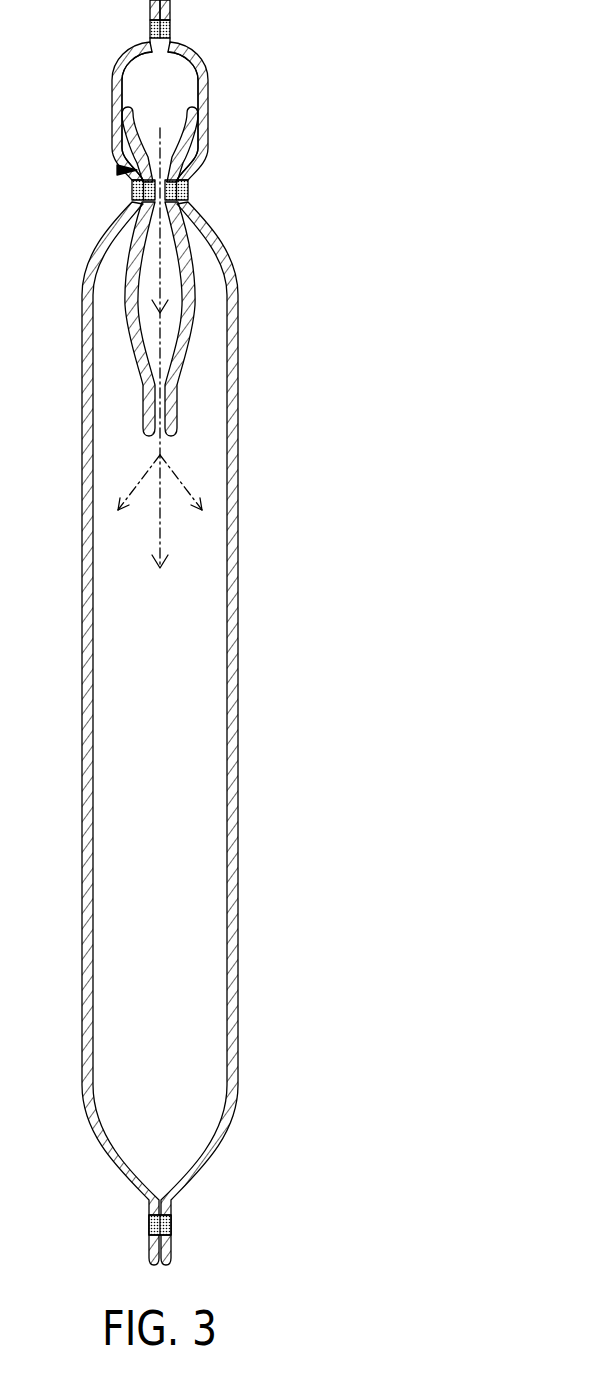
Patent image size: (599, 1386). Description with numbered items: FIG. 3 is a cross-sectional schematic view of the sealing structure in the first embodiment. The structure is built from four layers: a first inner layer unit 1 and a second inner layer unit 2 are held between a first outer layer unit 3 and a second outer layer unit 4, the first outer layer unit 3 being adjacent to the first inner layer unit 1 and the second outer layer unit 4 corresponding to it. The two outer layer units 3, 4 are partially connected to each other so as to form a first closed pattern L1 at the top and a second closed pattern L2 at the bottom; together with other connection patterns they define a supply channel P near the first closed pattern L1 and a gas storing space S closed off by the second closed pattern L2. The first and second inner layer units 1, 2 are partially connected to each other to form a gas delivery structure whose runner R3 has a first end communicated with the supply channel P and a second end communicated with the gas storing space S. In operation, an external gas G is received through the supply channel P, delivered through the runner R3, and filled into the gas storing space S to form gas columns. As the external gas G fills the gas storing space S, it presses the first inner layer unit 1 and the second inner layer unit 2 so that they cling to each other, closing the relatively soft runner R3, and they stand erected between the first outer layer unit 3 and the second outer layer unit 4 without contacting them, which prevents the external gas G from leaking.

The first closed pattern L1 is at (148, 30).
The supply channel P is at (167, 68).
The first outer layer unit 3 is at (118, 92).
The second outer layer unit 4 is at (200, 90).
The first inner layer unit 1 is at (130, 130).
The second inner layer unit 2 is at (192, 150).
The external gas G is at (265, 242).
The runner R3 is at (160, 344).
The gas storing space S is at (207, 780).
The second closed pattern L2 is at (148, 1230).